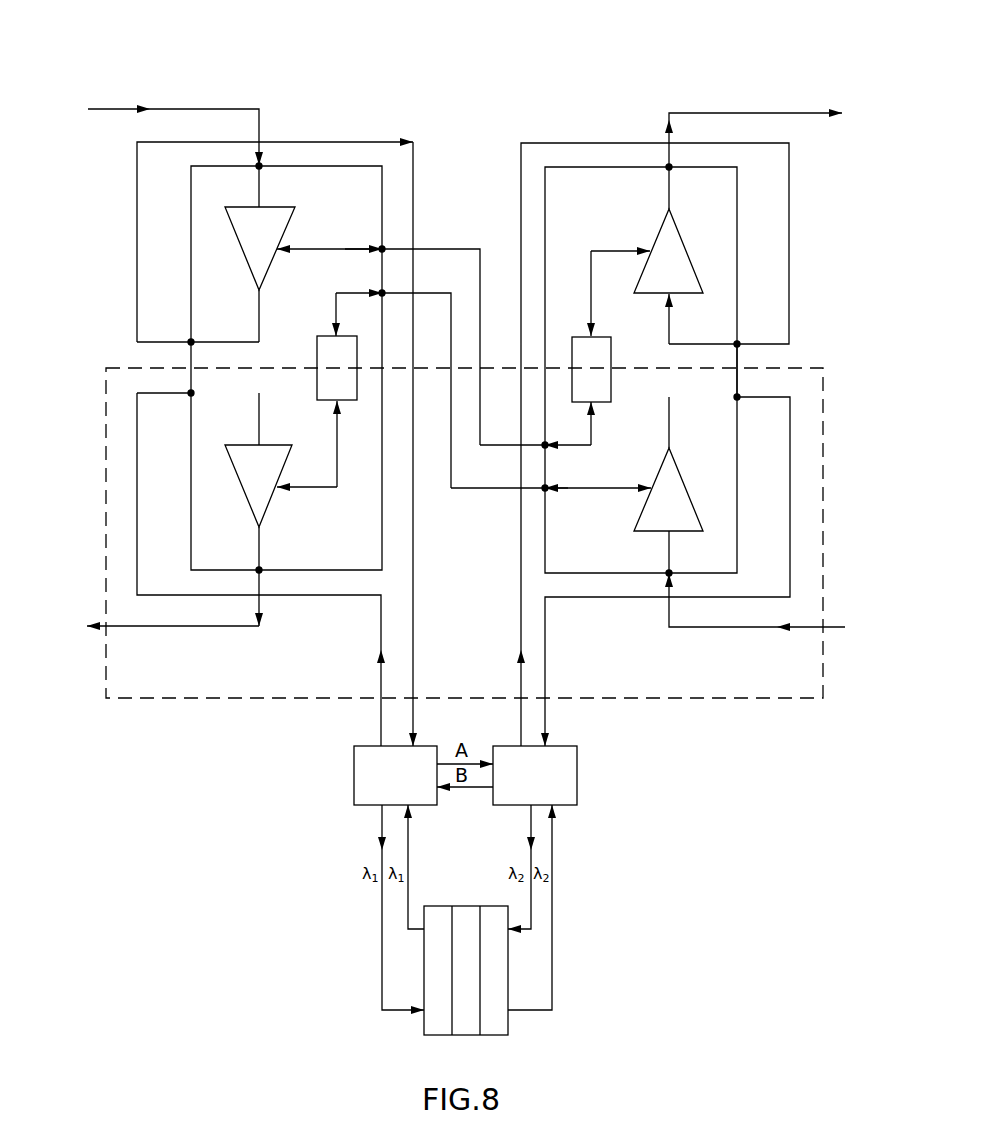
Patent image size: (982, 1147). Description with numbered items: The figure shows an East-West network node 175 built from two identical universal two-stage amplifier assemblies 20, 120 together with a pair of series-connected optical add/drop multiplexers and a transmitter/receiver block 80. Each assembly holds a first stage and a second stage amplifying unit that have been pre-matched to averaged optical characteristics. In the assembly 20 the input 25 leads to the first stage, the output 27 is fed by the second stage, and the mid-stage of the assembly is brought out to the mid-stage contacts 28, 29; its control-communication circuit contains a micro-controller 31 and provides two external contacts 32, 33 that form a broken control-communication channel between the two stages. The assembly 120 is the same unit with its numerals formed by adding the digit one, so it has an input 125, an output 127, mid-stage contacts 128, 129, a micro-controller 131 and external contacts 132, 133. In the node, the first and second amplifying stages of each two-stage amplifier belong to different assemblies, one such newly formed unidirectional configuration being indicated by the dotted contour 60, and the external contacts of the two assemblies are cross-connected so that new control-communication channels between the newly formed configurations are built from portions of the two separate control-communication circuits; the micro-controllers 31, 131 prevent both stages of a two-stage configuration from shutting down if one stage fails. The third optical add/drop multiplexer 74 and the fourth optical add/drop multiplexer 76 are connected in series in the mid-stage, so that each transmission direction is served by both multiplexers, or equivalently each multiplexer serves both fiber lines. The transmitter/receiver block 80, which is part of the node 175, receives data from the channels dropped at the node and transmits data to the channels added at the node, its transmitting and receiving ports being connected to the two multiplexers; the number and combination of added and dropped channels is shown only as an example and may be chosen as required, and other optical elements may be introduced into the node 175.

The node 175 is at (175, 35).
The universal two-stage amplifier assembly 120 is at (190, 472).
The universal two-stage amplifier assembly 20 is at (738, 495).
The output of the assembly 127 is at (277, 185).
The mid-stage contact 128 is at (198, 331).
The mid-stage contact 129 is at (184, 404).
The input of the assembly 125 is at (277, 586).
The micro-controller 131 is at (317, 358).
The external contact 132 is at (378, 333).
The external contact 133 is at (393, 389).
The output of the assembly 27 is at (682, 186).
The mid-stage contact 29 is at (704, 320).
The mid-stage contact 28 is at (726, 383).
The input of the assembly 25 is at (682, 553).
The micro-controller 31 is at (611, 358).
The external contact 33 is at (535, 425).
The external contact 32 is at (551, 500).
The unidirectional configuration 60 is at (823, 667).
The OADM3 74 is at (354, 777).
The OADM4 76 is at (577, 777).
The transmitter/receiver block 80 is at (464, 906).